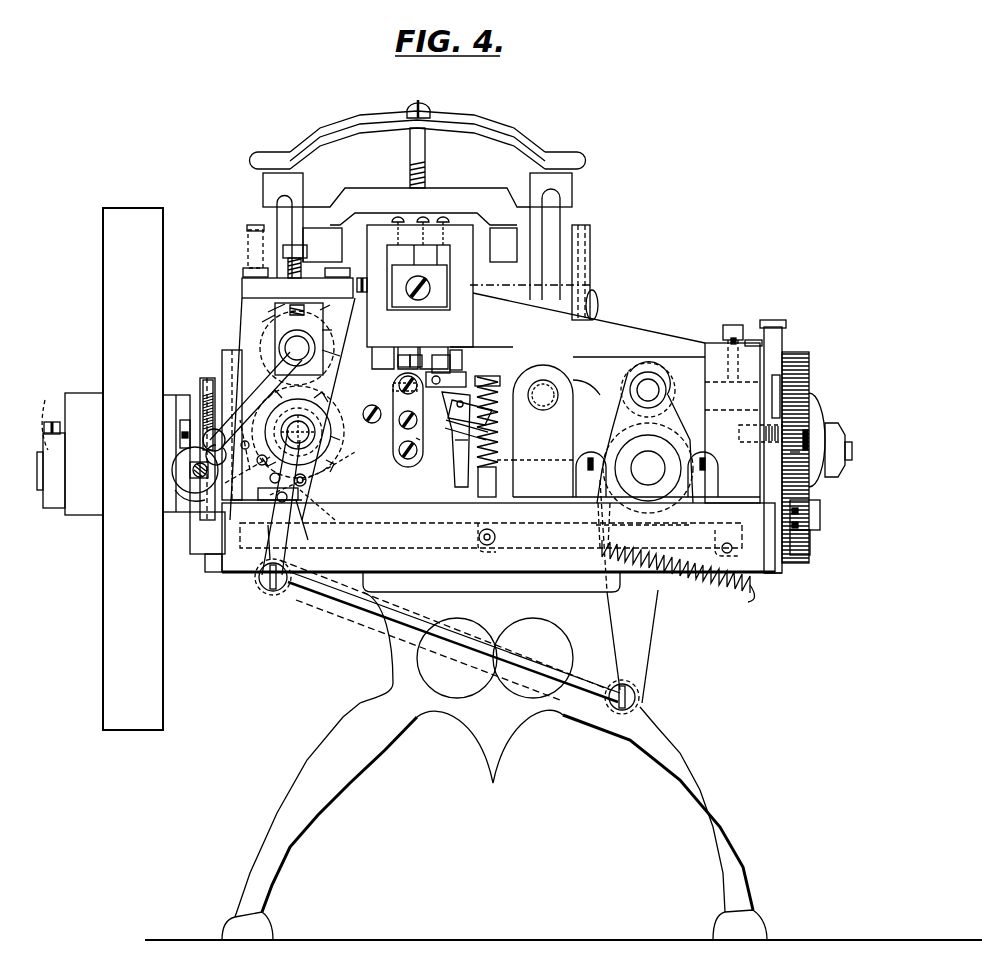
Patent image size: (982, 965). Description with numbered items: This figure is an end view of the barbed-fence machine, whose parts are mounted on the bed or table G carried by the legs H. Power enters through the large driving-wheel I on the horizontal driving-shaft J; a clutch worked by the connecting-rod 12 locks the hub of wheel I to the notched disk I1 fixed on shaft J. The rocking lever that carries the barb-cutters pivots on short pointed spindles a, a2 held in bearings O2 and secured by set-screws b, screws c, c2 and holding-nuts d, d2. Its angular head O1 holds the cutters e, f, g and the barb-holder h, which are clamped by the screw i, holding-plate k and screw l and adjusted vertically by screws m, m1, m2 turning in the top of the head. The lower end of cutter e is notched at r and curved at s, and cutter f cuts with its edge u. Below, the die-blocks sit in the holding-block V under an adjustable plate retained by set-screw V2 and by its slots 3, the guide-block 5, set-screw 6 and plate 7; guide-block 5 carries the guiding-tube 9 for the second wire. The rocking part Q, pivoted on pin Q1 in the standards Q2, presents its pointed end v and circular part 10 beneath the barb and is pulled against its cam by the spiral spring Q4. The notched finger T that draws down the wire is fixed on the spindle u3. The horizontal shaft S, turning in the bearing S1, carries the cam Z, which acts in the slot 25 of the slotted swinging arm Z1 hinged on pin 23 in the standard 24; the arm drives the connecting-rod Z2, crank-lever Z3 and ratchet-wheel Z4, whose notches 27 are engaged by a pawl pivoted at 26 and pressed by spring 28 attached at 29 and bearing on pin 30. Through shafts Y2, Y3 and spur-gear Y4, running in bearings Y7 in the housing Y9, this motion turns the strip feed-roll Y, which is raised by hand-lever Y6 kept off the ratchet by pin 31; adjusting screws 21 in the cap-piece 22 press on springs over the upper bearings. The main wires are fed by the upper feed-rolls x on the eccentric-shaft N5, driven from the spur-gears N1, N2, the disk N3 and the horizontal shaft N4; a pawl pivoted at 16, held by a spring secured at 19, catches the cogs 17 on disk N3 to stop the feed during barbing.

The driving-wheel or pulley I is at (133, 469).
The horizontal driving-shaft J is at (68, 448).
The screw c is at (181, 430).
The holding-nut d is at (174, 470).
The connecting-rod 12 is at (172, 492).
The notched wheel or disk I1 is at (205, 545).
The short pointed shaft or spindle a is at (208, 405).
The cap-piece 22 is at (242, 290).
The adjustable screw 21 is at (296, 250).
The feed-roll x is at (410, 245).
The screw m is at (396, 216).
The screw m1 is at (425, 216).
The screw m2 is at (450, 216).
The holding-plate k is at (440, 304).
The screw i is at (432, 290).
The screw l is at (364, 280).
The cutter e is at (387, 347).
The cutter f is at (412, 347).
The cutter g is at (436, 347).
The barb-holder h is at (481, 340).
The curved portion of cutter s is at (404, 361).
The cutting-edge of cutter u is at (416, 360).
The guiding-tube 9 is at (441, 364).
The guide-block 5 is at (456, 360).
The set-screw 6 is at (446, 386).
The notch of cutter r is at (395, 386).
The holding-block V is at (399, 430).
The set-screw V2 is at (374, 424).
The plate 7 is at (414, 436).
The circular part of rocking part 10 is at (452, 452).
The slot 3 is at (469, 409).
The pointed end of rocking part v is at (461, 428).
The notched finger T is at (485, 378).
The rocking part Q is at (553, 431).
The pin Q1 is at (586, 380).
The standard Q2 is at (543, 448).
The spindle u3 is at (535, 468).
The head of rocking lever O1 is at (470, 230).
The eccentric-shaft N5 is at (600, 300).
The pin 23 is at (648, 390).
The standard 24 is at (648, 390).
The horizontal driving-shaft S is at (648, 468).
The cam Z is at (645, 455).
The bearing S1 is at (719, 476).
The slot of swinging arm 25 is at (670, 514).
The bearing O2 is at (743, 423).
The set-screw b is at (733, 342).
The cog 17 is at (758, 330).
The disk N3 is at (776, 326).
The short pointed shaft or spindle a2 is at (776, 374).
The spur-gear N2 is at (790, 352).
The screw c2 is at (808, 420).
The holding-nut d2 is at (791, 453).
The horizontal shaft N4 is at (838, 430).
The spring attachment point 19 is at (790, 506).
The pawl pivot 16 is at (790, 544).
The spur-gear N1 is at (800, 568).
The spiral spring Q4 is at (735, 594).
The bed or table G is at (498, 544).
The hand-lever Y6 is at (280, 360).
The feed-roll Y is at (262, 322).
The eccentric-shaft Y2 is at (267, 312).
The spur-gear Y4 is at (332, 298).
The bearing Y7 is at (335, 331).
The standard or housing Y9 is at (338, 357).
The ratchet-wheel Z4 is at (330, 420).
The notch 27 is at (326, 462).
The shaft Y3 is at (342, 441).
The pin 31 is at (245, 437).
The spring 28 is at (262, 482).
The lever Z3 is at (322, 492).
The spring attachment point 29 is at (317, 507).
The pin 30 is at (306, 520).
The pawl pivot 26 is at (276, 500).
The connecting-rod Z2 is at (523, 660).
The slotted swinging arm Z1 is at (629, 597).
The leg or standard H is at (362, 708).